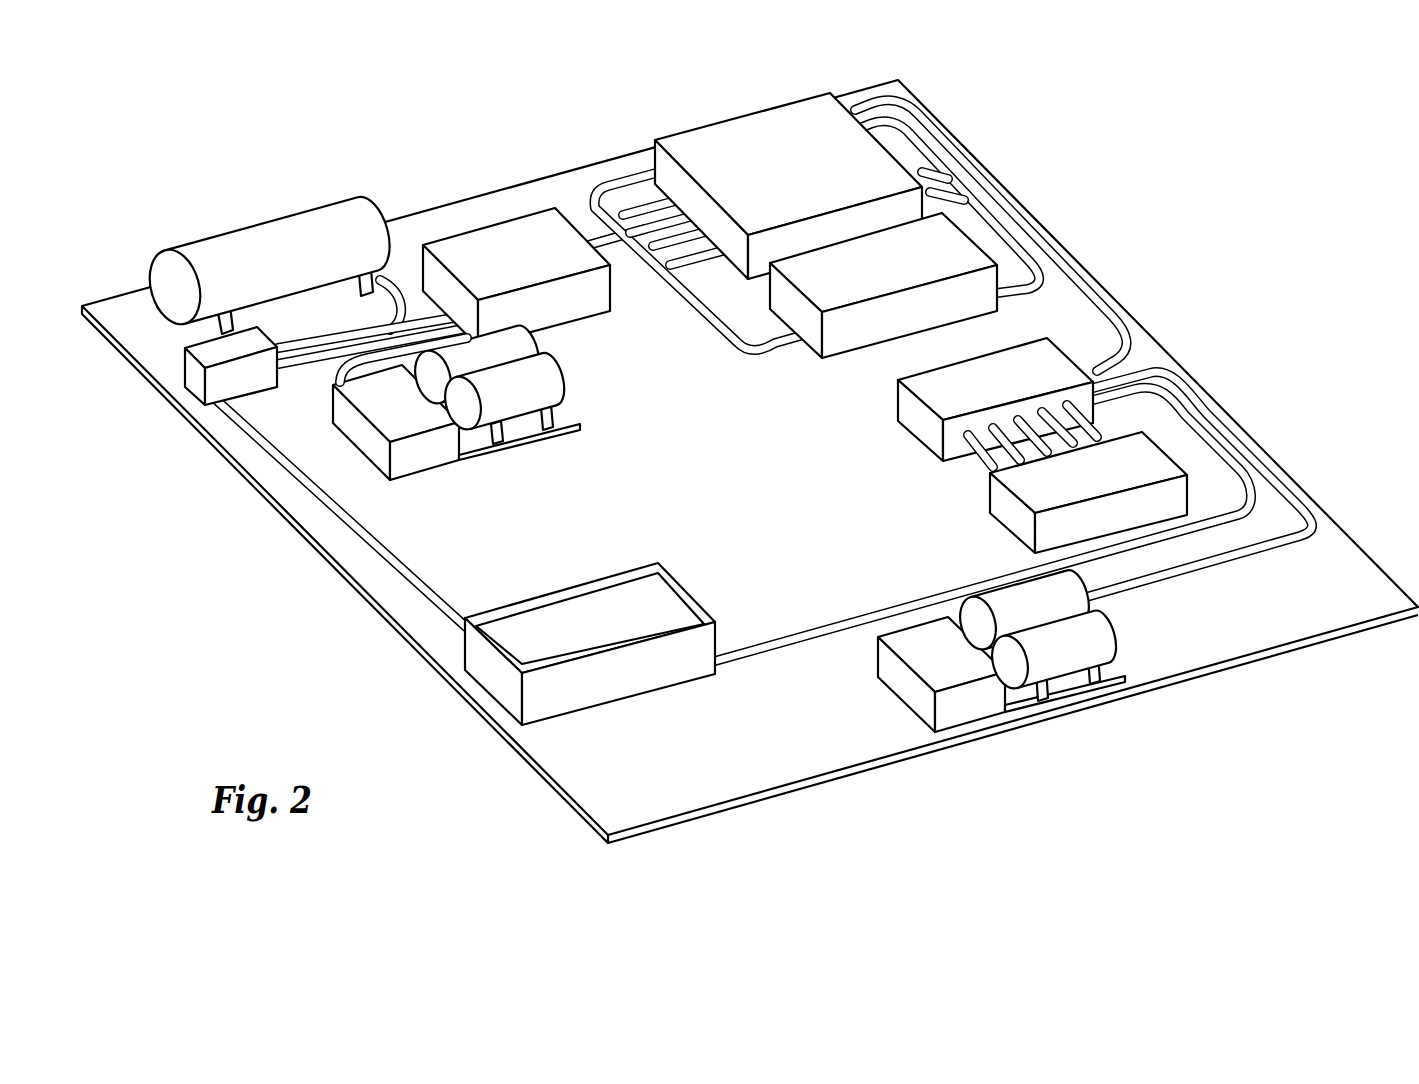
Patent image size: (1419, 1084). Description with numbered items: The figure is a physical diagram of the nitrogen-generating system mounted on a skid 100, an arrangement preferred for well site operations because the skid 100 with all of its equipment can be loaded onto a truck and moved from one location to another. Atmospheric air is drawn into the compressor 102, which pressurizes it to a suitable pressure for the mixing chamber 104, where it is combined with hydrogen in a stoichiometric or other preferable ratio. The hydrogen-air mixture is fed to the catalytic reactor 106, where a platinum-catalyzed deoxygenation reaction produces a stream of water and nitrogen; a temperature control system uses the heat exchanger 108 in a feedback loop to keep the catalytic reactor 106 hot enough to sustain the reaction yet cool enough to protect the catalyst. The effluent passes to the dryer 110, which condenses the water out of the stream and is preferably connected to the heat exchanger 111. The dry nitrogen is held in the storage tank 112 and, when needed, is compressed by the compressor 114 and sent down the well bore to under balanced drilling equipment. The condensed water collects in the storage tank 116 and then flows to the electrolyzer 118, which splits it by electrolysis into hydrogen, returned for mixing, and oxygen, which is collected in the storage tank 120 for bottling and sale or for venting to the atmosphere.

The skid 100 is at (348, 603).
The compressor 102 is at (537, 400).
The mixing chamber 104 is at (523, 235).
The catalytic reactor 106 is at (757, 130).
The heat exchanger 108 is at (942, 247).
The dryer 110 is at (1050, 357).
The heat exchanger 111 is at (1138, 467).
The storage tank 112 is at (1058, 662).
The compressor 114 is at (968, 710).
The storage tank 116 is at (673, 583).
The electrolyzer 118 is at (198, 385).
The storage tank 120 is at (248, 242).